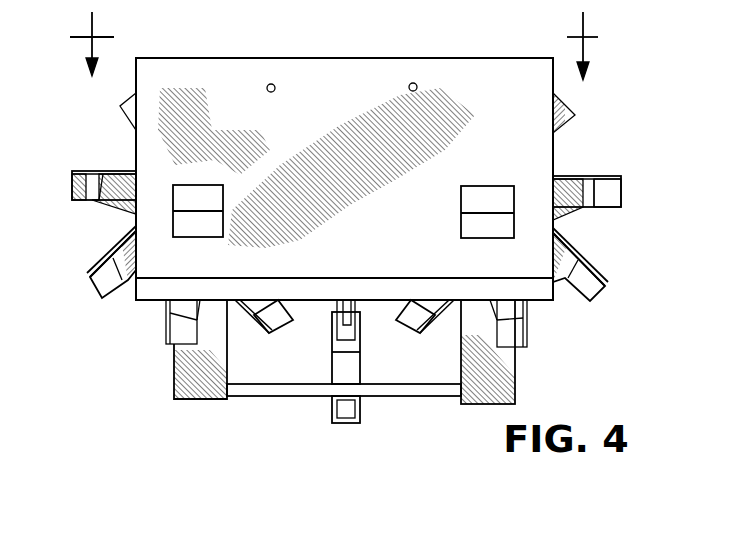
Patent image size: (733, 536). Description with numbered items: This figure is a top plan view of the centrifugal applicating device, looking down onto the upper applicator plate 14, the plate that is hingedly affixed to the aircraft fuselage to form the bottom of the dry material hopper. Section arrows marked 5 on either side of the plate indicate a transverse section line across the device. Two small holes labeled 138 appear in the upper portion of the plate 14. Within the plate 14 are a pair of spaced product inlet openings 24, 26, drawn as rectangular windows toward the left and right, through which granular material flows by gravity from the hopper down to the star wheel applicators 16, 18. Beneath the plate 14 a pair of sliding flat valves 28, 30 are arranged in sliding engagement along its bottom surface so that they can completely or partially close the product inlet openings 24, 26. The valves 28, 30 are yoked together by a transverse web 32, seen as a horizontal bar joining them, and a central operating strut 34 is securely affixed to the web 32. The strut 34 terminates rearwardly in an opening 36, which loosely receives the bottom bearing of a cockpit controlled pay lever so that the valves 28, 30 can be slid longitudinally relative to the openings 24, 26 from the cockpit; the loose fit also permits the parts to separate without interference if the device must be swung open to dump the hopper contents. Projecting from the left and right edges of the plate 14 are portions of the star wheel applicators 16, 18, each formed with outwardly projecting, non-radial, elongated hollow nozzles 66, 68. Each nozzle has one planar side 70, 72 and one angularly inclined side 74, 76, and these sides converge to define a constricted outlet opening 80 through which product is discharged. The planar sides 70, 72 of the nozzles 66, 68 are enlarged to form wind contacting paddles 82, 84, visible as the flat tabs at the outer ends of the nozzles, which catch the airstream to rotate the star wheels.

The section line 5- 5 is at (334, 40).
The upper applicator plate 14 is at (537, 70).
The aperture 138 is at (417, 86).
The star wheel applicator 16 is at (573, 176).
The star wheel applicator 18 is at (112, 215).
The product inlet opening 24 is at (496, 192).
The product inlet opening 26 is at (188, 192).
The sliding flat valve 28 is at (505, 364).
The sliding flat valve 30 is at (218, 398).
The transverse web 32 is at (432, 392).
The central operating strut 34 is at (355, 362).
The opening 36 is at (352, 408).
The hollow nozzle 66 is at (563, 272).
The hollow nozzle 68 is at (110, 298).
The planar side 70 is at (612, 191).
The planar side 72 is at (82, 203).
The angularly inclined side 74 is at (585, 213).
The angularly inclined side 76 is at (128, 282).
The constricted outlet opening 80 is at (88, 290).
The wind contacting paddle 82 is at (598, 270).
The wind contacting paddle 84 is at (97, 171).